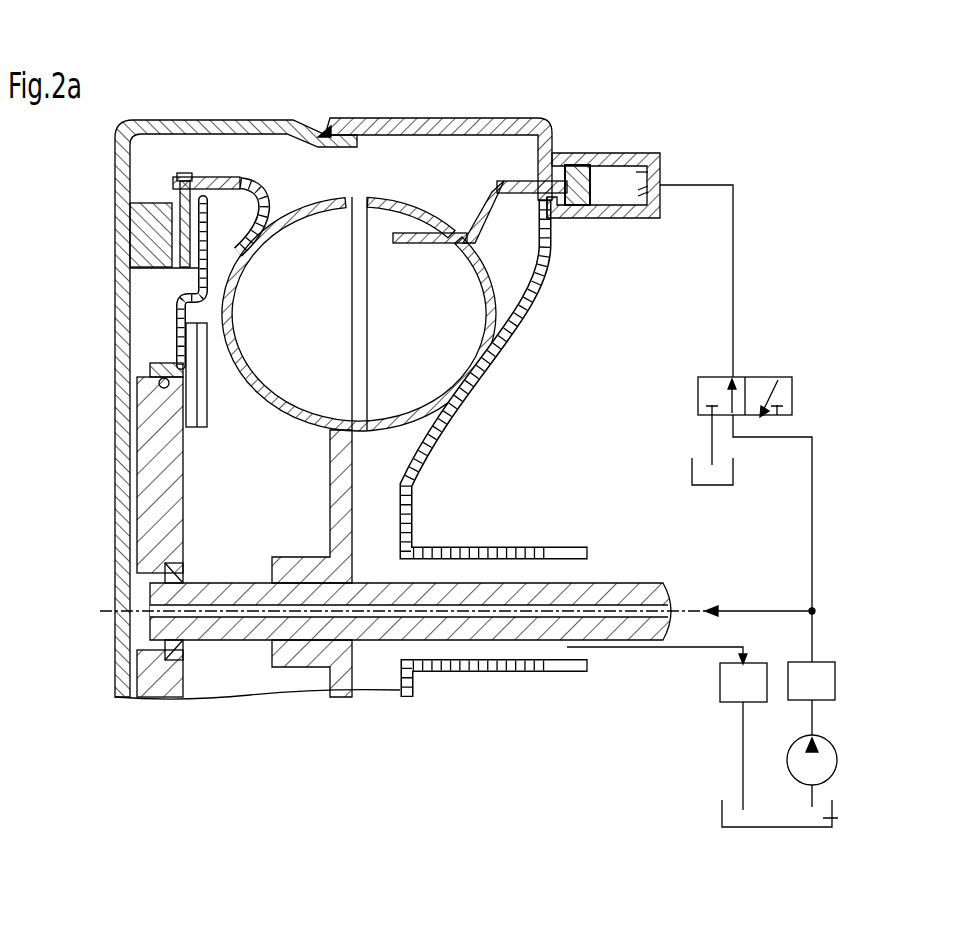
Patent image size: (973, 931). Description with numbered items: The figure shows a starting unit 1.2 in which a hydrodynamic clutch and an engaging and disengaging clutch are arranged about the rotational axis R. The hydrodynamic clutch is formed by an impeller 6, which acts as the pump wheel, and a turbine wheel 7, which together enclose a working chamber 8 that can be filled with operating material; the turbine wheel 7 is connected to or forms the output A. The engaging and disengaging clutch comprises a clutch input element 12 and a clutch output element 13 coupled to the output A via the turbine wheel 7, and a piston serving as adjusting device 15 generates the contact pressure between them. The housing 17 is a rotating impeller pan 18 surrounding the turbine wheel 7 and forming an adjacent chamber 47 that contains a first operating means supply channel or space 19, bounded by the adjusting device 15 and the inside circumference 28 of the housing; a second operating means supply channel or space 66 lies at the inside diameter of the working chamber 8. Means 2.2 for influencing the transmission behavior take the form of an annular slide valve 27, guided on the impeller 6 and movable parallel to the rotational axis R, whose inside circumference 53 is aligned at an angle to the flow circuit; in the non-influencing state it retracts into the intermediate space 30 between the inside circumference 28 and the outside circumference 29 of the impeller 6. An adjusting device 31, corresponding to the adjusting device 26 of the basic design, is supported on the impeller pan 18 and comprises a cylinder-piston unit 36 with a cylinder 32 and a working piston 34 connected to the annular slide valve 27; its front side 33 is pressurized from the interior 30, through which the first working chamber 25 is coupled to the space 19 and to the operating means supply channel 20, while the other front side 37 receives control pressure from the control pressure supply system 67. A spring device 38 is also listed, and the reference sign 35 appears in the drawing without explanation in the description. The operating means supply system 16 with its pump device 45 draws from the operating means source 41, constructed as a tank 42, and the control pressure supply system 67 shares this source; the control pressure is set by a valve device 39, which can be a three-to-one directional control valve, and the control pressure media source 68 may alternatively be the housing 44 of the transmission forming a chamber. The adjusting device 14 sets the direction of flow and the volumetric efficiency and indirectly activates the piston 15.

The starting unit 1.2 is at (380, 105).
The inside circumference 28 is at (440, 147).
The means for influencing the transmission behavior 2.2 is at (463, 144).
The adjusting device 31 is at (603, 138).
The adjusting device 26 is at (566, 148).
The first working chamber 25 is at (604, 201).
The spring device 38 is at (650, 170).
The valve outlet 35 is at (650, 190).
The outside circumference 29 is at (377, 195).
The intermediate space 30 is at (515, 205).
The annular slide valve 27 is at (486, 226).
The inside circumference 53 is at (430, 247).
The clutch output element 13 is at (190, 228).
The clutch input element 12 is at (162, 236).
The first operating means supply channel or space 19 is at (162, 325).
The working chamber 8 is at (359, 335).
The adjusting device 15 is at (158, 404).
The turbine wheel 7 is at (263, 404).
The adjacent chamber 47 is at (272, 520).
The second operating means supply channel or space 66 is at (387, 510).
The impeller pan 18 is at (509, 448).
The housing 17 is at (509, 448).
The impeller 6 is at (483, 381).
The operating means supply channel 20 is at (673, 585).
The front side 33 is at (553, 216).
The working piston 34 is at (580, 208).
The front side 37 is at (604, 201).
The cylinder 32 is at (612, 183).
The cylinder-piston unit 36 is at (629, 183).
The control pressure supply system 67 is at (804, 364).
The valve device 39 is at (802, 374).
The housing 44 is at (710, 473).
The control pressure media source 68 is at (803, 634).
The operating means supply system 16 is at (750, 718).
The adjusting device 14 is at (711, 718).
The pump device 45 is at (833, 754).
The operating means source 41 is at (828, 790).
The tank 42 is at (835, 815).
The output A is at (673, 627).
The rotational axis R is at (108, 614).